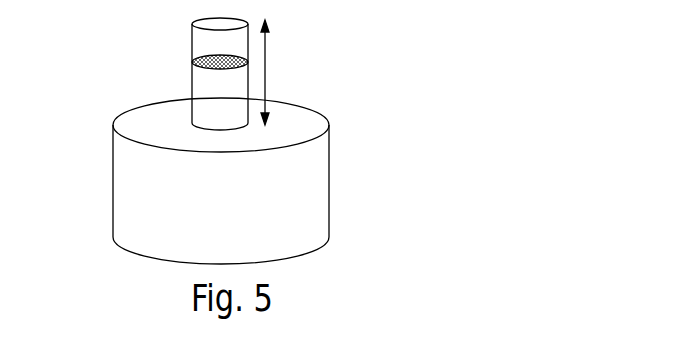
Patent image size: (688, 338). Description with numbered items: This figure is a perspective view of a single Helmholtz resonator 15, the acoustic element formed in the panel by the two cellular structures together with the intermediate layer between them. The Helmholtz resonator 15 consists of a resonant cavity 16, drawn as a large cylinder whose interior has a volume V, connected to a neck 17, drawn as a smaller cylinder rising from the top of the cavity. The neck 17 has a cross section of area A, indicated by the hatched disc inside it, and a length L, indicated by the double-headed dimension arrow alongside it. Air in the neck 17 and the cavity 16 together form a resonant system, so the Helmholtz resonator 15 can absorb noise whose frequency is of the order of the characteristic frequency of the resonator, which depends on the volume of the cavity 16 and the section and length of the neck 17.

The Helmholtz resonator 15 is at (297, 141).
The resonant cavity 16 is at (329, 193).
The neck 17 is at (193, 96).